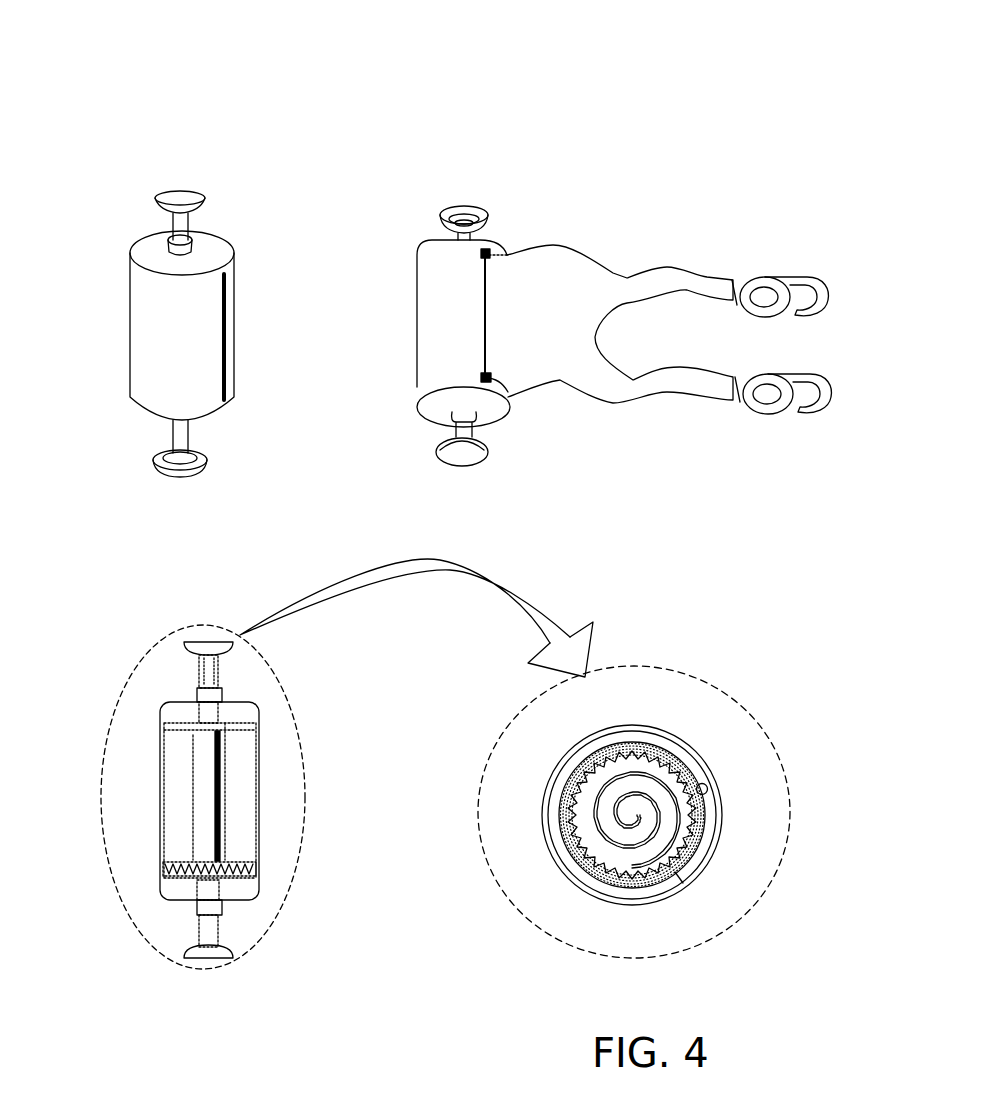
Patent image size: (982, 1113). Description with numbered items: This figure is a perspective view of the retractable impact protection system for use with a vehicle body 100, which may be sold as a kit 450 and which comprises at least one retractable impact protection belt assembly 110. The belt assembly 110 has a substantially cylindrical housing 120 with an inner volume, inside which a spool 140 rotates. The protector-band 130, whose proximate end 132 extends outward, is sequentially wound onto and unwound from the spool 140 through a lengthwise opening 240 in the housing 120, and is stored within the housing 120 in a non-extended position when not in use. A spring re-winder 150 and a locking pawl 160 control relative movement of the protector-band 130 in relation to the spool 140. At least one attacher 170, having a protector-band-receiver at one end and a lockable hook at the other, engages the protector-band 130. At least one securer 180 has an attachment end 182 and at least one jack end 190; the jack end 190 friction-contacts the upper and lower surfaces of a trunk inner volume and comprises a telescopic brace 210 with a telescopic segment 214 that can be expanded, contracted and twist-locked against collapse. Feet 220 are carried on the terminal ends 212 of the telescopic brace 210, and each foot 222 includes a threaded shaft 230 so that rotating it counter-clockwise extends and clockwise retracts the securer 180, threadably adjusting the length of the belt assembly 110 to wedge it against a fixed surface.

The retractable impact protection system for use with a vehicle body 100 is at (698, 65).
The retractable impact protection belt assembly 110 is at (705, 97).
The kit 450 is at (715, 132).
The housing 120 is at (414, 285).
The protector-band 130 is at (566, 243).
The proximate end 132 is at (677, 265).
The spool 140 is at (224, 773).
The spring re-winder 150 is at (230, 881).
The locking pawl 160 is at (250, 867).
The attacher 170 is at (796, 273).
The securer 180 is at (191, 222).
The attachment end 182 is at (194, 903).
The jack end 190 is at (481, 469).
The telescopic brace 210 is at (475, 428).
The terminal end 212 is at (171, 222).
The telescopic segment 214 is at (193, 672).
The foot 220 is at (211, 453).
The foot 222 is at (474, 201).
The threaded shaft 230 is at (217, 672).
The lengthwise opening 240 is at (479, 322).